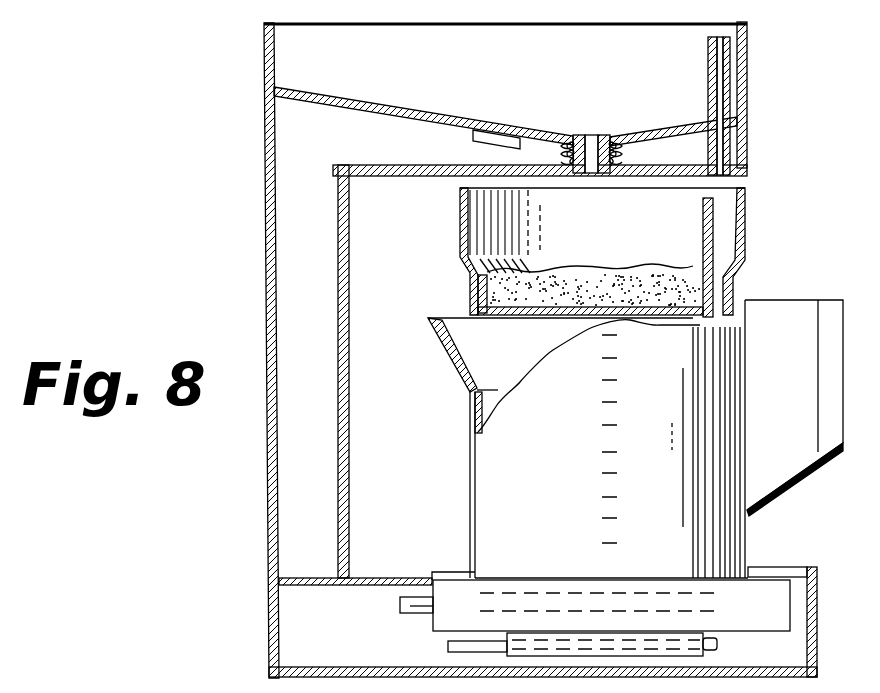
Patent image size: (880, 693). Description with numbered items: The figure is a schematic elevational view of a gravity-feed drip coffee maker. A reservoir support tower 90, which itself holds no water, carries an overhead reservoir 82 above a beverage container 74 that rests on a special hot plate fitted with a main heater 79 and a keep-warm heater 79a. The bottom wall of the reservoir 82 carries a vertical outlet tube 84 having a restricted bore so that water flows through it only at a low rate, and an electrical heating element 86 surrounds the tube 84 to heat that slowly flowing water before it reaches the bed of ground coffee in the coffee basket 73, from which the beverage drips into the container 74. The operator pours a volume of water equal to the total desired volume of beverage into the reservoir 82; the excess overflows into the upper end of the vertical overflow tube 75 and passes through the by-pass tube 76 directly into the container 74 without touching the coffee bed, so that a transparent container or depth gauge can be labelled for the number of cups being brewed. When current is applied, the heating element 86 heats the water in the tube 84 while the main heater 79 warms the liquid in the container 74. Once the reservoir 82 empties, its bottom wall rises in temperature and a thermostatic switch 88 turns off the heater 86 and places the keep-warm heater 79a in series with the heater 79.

The reservoir support tower 90 is at (267, 236).
The overhead reservoir 82 is at (398, 71).
The thermostatic switch 88 is at (500, 138).
The vertical outlet tube 84 is at (587, 136).
The electrical heating element 86 is at (637, 165).
The vertical overflow tube 75 is at (733, 157).
The coffee basket 73 is at (472, 223).
The by-pass tube 76 is at (722, 231).
The beverage container 74 is at (747, 543).
The main heater 79 is at (417, 597).
The keep-warm heater 79a is at (448, 645).